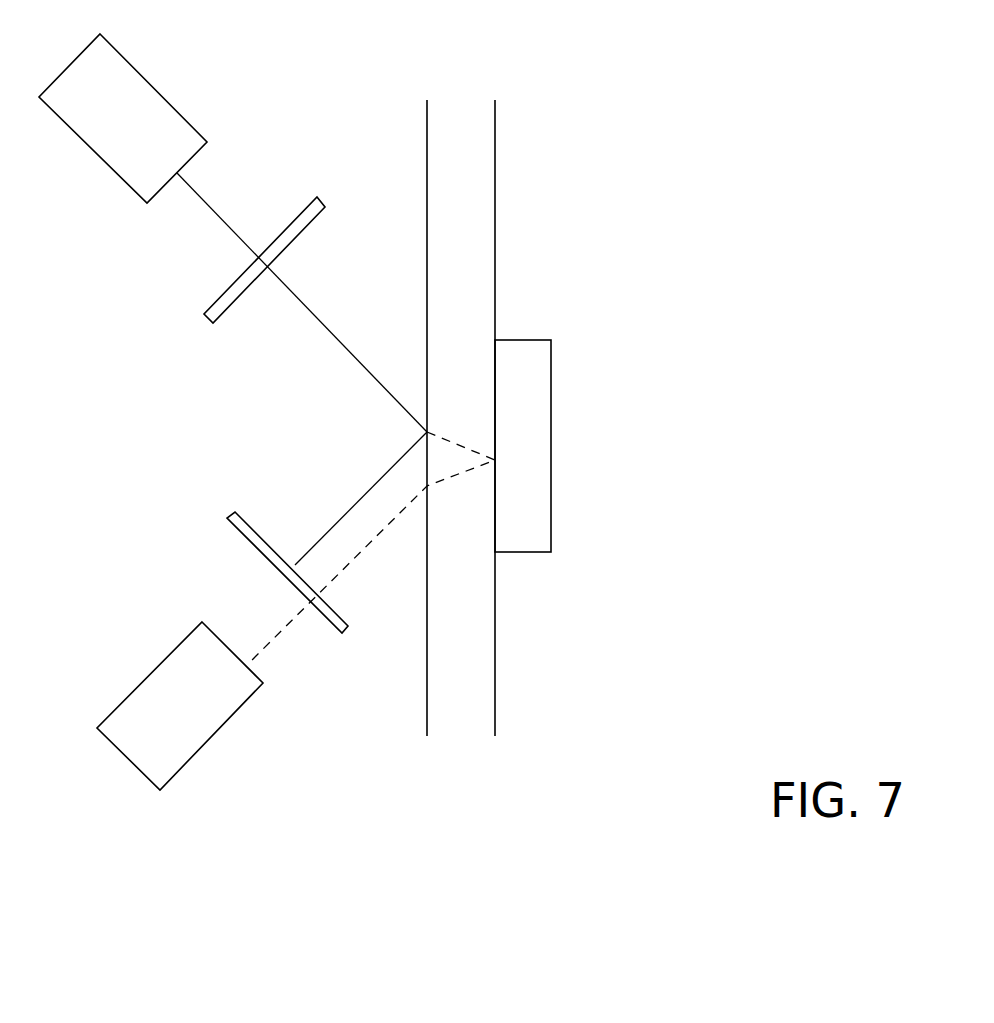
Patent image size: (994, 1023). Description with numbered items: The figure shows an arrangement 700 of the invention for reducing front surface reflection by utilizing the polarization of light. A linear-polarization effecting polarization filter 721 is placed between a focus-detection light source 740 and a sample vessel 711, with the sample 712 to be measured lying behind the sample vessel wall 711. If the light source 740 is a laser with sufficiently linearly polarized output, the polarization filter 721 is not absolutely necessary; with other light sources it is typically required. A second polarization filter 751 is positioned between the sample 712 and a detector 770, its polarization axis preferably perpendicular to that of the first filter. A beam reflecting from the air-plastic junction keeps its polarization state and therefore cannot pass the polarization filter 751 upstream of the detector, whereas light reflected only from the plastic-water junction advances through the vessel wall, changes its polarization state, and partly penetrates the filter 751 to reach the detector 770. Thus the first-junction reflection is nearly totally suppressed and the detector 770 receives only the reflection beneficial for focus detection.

The arrangement 700 is at (637, 59).
The sample vessel 711 is at (498, 182).
The sample 712 is at (528, 330).
The focus-detection light source 740 is at (158, 83).
The polarization filter 721 is at (327, 205).
The second polarization filter 751 is at (232, 533).
The detector 770 is at (135, 775).